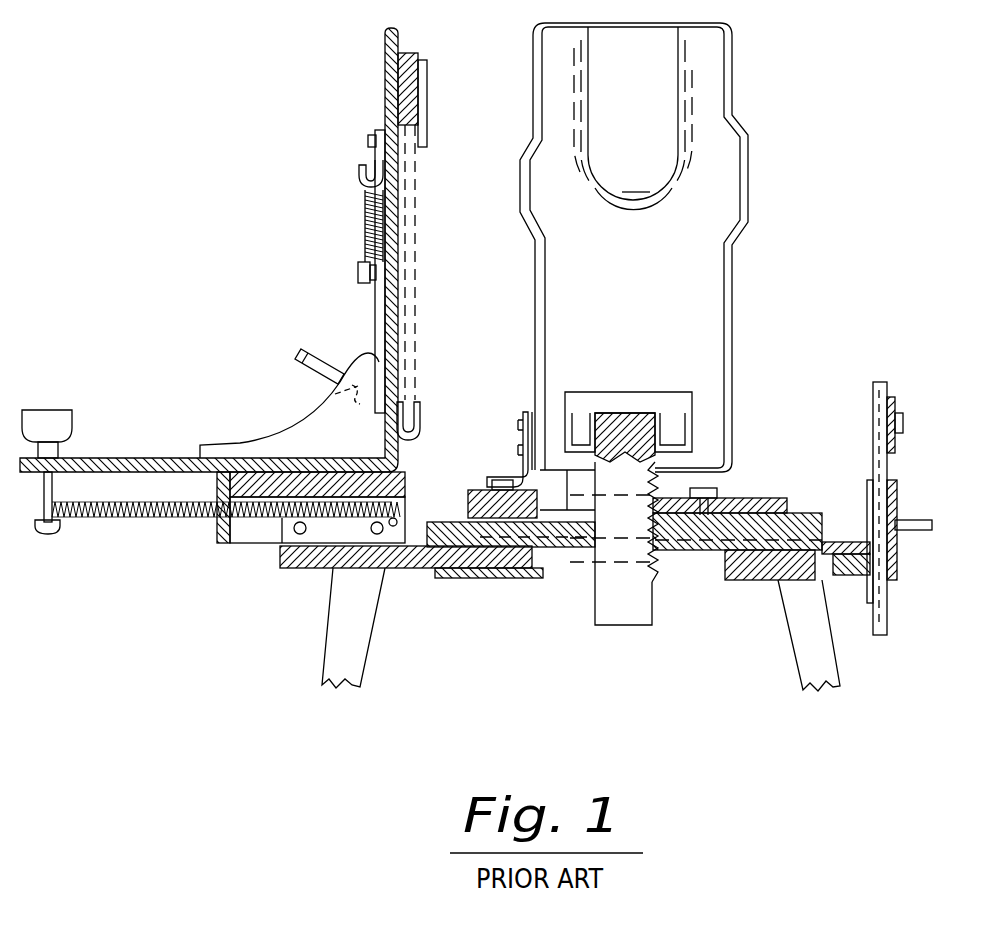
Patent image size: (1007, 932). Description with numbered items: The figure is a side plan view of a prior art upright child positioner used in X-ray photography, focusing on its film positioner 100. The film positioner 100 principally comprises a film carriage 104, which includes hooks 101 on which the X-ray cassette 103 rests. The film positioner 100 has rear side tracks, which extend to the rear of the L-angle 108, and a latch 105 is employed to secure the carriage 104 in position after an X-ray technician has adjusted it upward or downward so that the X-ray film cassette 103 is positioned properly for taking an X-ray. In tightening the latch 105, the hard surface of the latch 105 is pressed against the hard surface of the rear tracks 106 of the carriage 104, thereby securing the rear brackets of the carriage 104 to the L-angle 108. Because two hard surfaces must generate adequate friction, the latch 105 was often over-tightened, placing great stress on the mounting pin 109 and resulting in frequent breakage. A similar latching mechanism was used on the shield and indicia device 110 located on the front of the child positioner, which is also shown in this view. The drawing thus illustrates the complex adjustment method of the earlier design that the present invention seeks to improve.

The film positioner 100 is at (296, 146).
The hooks 101 is at (422, 410).
The X-ray cassette 103 is at (415, 232).
The film carriage 104 is at (366, 280).
The latch 105 is at (292, 372).
The rear tracks 106 is at (378, 307).
The L-angle 108 is at (386, 318).
The mounting pin 109 is at (366, 376).
The shield and indicia device 110 is at (903, 366).